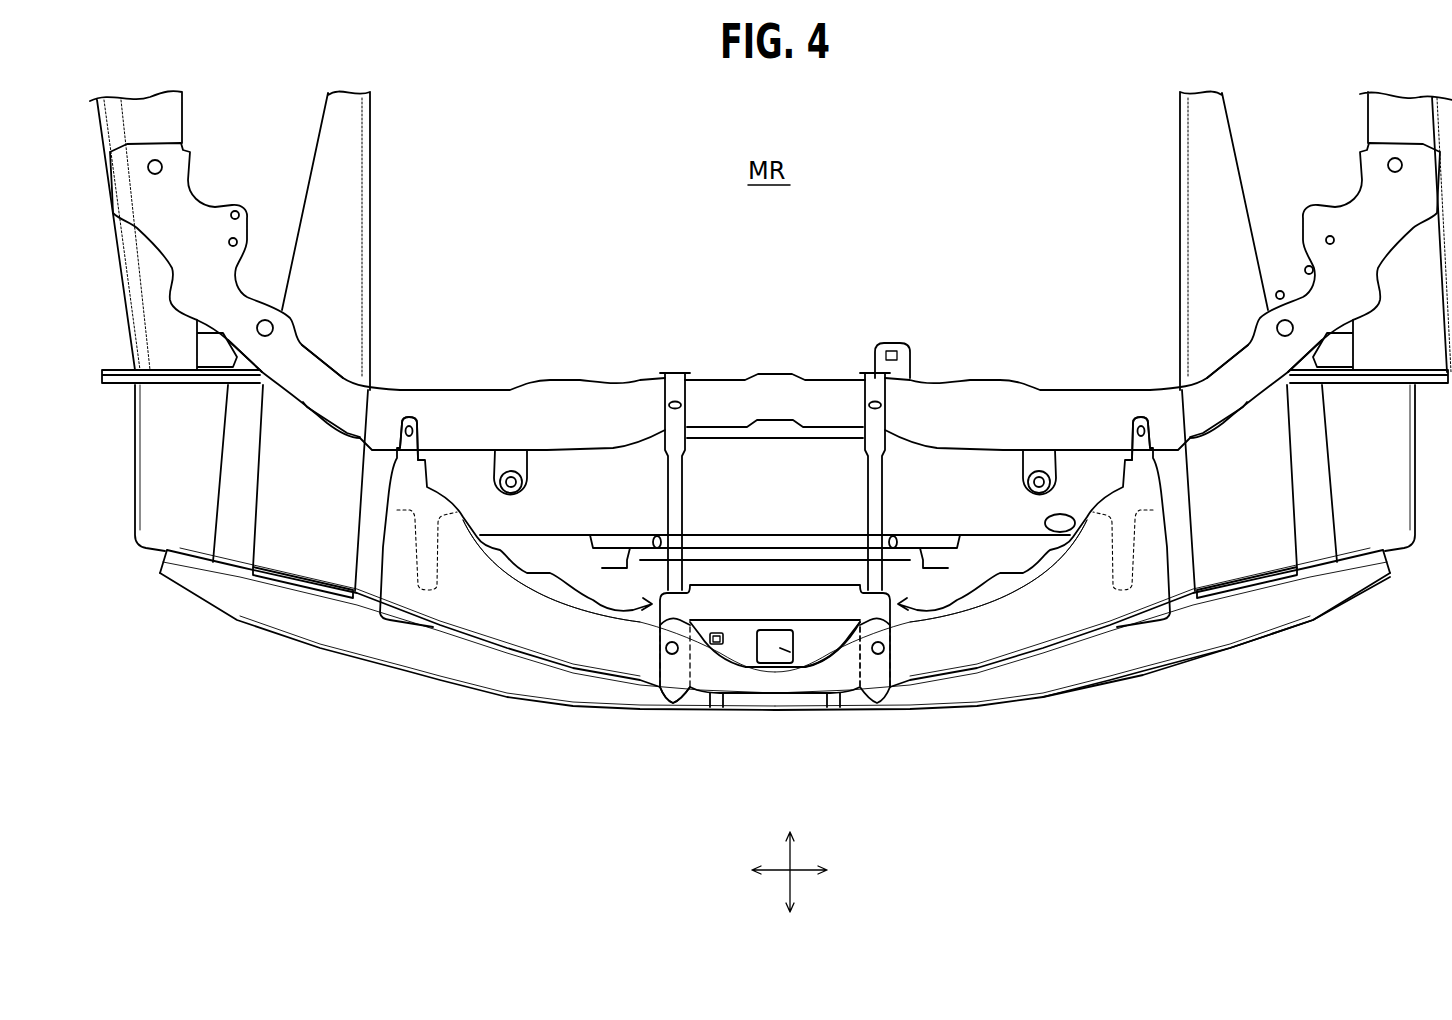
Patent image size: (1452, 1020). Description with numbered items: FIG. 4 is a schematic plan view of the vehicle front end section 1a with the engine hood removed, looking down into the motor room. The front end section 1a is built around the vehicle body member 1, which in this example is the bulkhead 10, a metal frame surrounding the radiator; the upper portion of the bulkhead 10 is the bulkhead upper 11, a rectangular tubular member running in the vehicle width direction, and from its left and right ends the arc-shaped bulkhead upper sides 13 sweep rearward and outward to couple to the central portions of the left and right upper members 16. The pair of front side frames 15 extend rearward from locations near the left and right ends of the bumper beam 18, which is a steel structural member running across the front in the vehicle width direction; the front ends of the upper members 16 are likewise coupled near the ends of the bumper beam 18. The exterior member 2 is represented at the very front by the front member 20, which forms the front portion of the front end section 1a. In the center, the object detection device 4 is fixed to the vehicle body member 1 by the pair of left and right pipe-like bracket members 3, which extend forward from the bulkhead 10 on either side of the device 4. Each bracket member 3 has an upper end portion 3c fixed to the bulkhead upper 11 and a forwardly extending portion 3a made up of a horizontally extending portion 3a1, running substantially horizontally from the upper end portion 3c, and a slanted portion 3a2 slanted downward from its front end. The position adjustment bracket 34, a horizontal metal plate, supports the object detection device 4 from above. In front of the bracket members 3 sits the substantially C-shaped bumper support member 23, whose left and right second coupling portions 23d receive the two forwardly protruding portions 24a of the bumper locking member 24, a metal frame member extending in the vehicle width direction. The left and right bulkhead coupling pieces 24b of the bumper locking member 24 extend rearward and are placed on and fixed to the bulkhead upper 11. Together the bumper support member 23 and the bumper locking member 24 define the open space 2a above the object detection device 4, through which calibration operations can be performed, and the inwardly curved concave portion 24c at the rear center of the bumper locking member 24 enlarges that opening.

The vehicle body member 1 is at (1227, 661).
The vehicle front end section 1a is at (1148, 686).
The exterior member 2 is at (640, 607).
The open space 2a is at (747, 643).
The bracket members 3 is at (840, 439).
The forwardly extending portion 3a is at (840, 481).
The horizontally extending portion 3a1 is at (868, 430).
The slanted portion 3a2 is at (886, 512).
The upper end portion 3c is at (887, 402).
The object detection device 4 is at (775, 698).
The bulkhead 10 is at (775, 418).
The bulkhead upper 11 is at (582, 398).
The bulkhead upper sides 13 is at (243, 310).
The front side frames 15 is at (363, 152).
The upper members 16 is at (168, 115).
The bumper beam 18 is at (253, 617).
The front member 20 is at (775, 651).
The bumper support member 23 is at (840, 680).
The second coupling portions 23d is at (910, 660).
The bumper locking member 24 is at (774, 571).
The protruding portions 24a is at (675, 697).
The bulkhead coupling pieces 24b is at (418, 447).
The concave portion 24c is at (827, 643).
The position adjustment bracket 34 is at (780, 650).